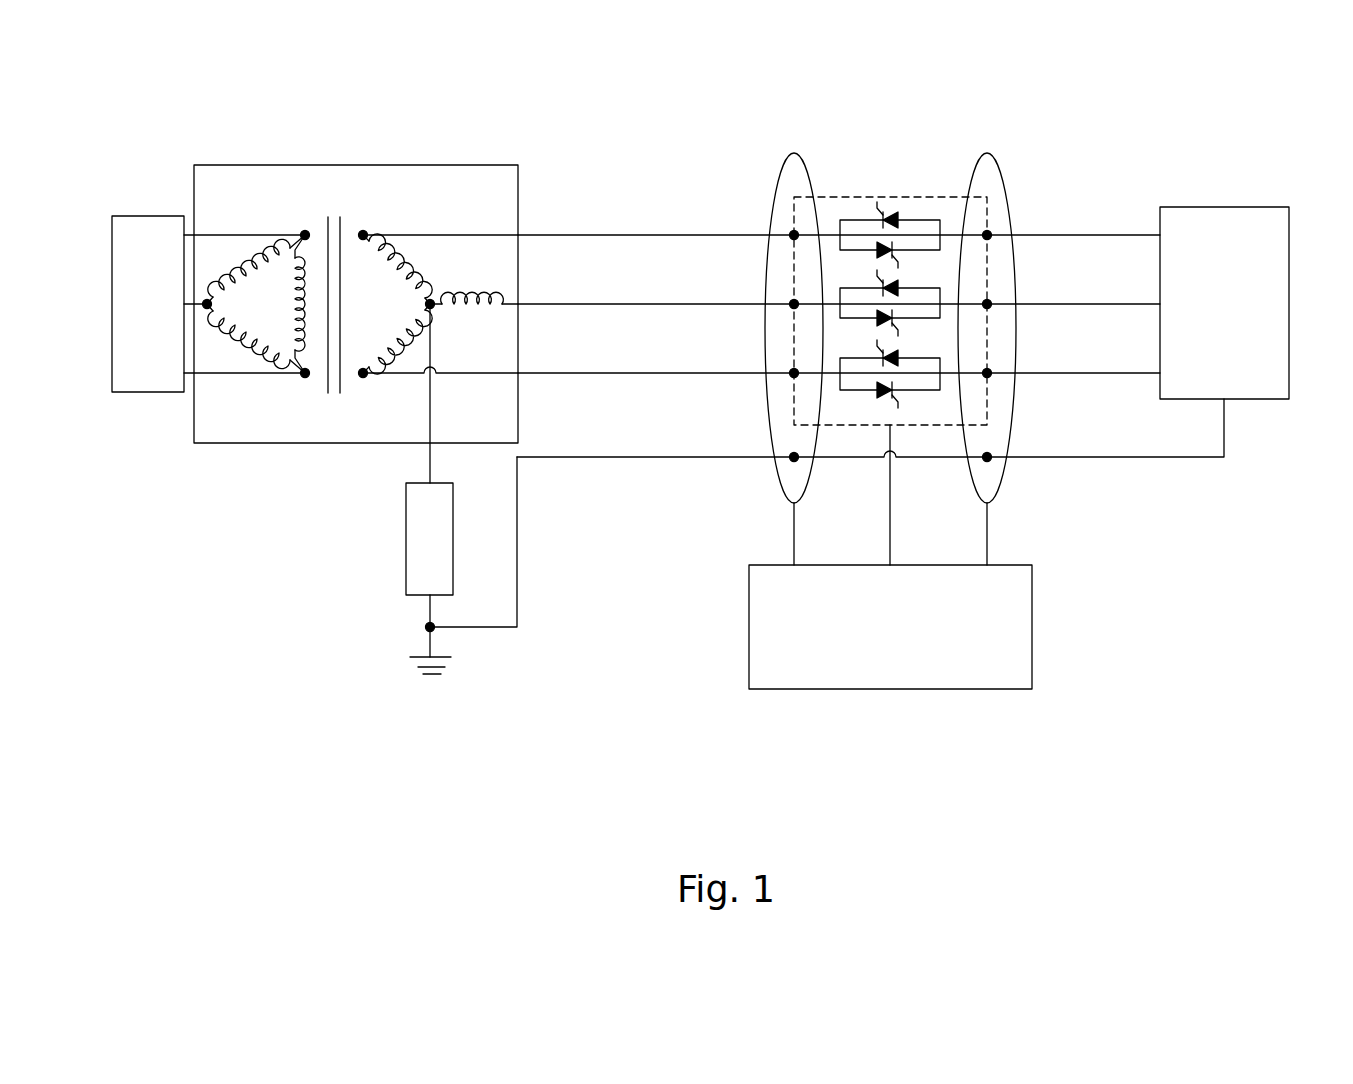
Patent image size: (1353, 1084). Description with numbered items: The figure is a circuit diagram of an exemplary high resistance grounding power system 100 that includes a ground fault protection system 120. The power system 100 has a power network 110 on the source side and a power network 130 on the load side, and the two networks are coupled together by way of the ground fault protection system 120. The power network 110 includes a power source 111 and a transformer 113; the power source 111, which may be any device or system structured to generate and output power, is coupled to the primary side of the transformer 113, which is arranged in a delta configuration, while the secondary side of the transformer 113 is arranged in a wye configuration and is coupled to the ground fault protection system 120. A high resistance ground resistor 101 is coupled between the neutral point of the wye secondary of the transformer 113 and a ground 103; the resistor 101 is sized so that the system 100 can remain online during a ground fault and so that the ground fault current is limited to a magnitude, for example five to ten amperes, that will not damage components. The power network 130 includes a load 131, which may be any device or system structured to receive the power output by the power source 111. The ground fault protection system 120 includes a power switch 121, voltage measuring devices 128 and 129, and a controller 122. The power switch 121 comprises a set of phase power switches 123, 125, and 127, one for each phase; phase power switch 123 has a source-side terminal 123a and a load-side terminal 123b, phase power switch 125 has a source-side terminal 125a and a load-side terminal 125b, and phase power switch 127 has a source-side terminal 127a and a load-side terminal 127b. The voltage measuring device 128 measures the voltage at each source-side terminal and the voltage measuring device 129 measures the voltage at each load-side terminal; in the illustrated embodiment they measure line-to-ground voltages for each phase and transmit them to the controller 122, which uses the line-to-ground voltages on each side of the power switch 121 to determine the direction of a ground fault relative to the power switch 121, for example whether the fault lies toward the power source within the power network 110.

The high resistance grounding power system 100 is at (1125, 705).
The high resistance ground resistor 101 is at (406, 560).
The ground 103 is at (413, 668).
The power network 110 is at (650, 522).
The power source 111 is at (147, 216).
The transformer 113 is at (351, 445).
The ground fault protection system 120 is at (1056, 484).
The power switch 121 is at (855, 197).
The controller 122 is at (893, 693).
The phase power switch 123 is at (918, 220).
The source-side terminal 123a is at (794, 235).
The load-side terminal 123b is at (987, 235).
The phase power switch 125 is at (918, 288).
The source-side terminal 125a is at (794, 304).
The load-side terminal 125b is at (987, 304).
The phase power switch 127 is at (918, 358).
The source-side terminal 127a is at (794, 373).
The load-side terminal 127b is at (987, 373).
The voltage measuring device 128 is at (794, 152).
The voltage measuring device 129 is at (988, 152).
The power network 130 is at (1113, 128).
The load 131 is at (1218, 207).